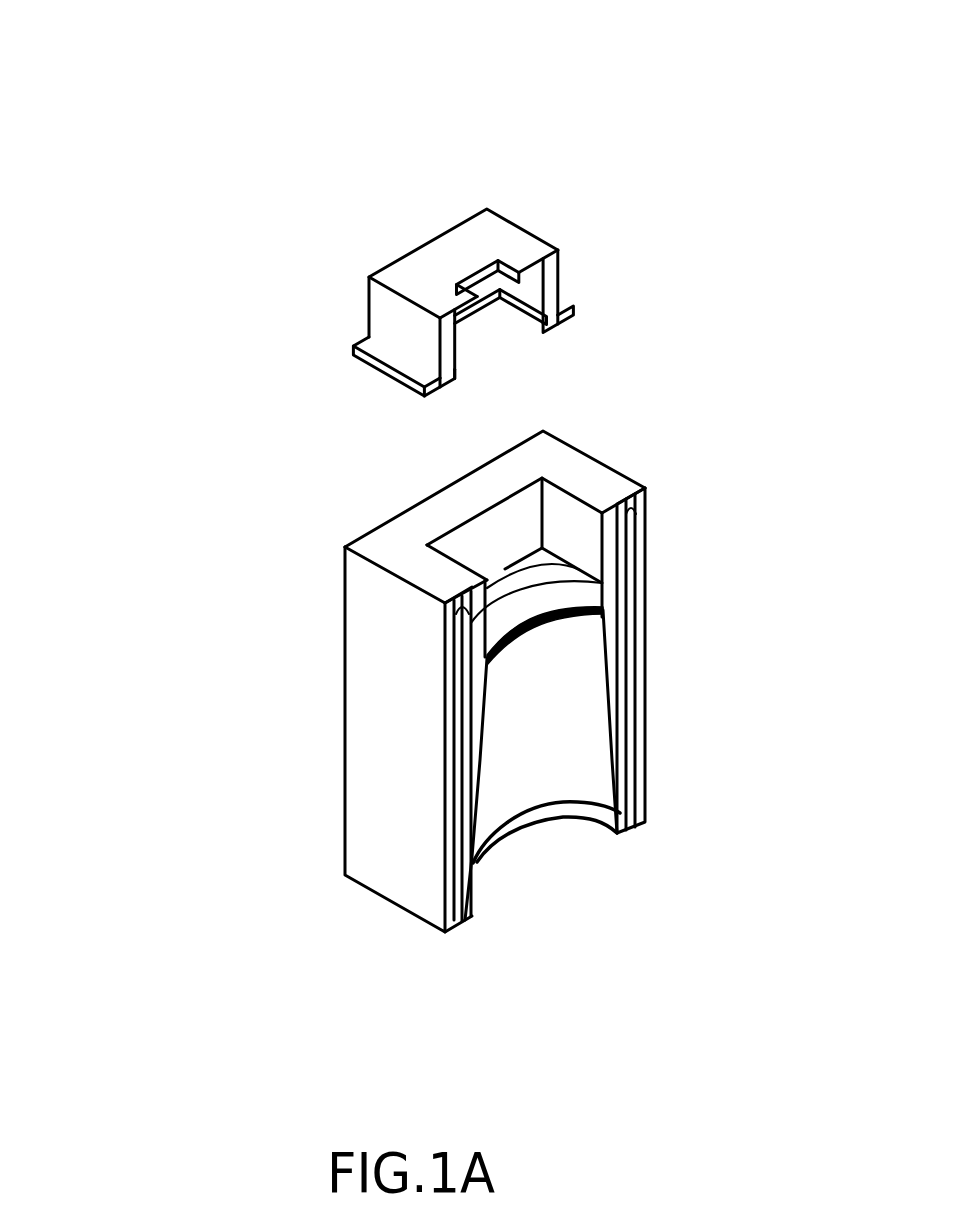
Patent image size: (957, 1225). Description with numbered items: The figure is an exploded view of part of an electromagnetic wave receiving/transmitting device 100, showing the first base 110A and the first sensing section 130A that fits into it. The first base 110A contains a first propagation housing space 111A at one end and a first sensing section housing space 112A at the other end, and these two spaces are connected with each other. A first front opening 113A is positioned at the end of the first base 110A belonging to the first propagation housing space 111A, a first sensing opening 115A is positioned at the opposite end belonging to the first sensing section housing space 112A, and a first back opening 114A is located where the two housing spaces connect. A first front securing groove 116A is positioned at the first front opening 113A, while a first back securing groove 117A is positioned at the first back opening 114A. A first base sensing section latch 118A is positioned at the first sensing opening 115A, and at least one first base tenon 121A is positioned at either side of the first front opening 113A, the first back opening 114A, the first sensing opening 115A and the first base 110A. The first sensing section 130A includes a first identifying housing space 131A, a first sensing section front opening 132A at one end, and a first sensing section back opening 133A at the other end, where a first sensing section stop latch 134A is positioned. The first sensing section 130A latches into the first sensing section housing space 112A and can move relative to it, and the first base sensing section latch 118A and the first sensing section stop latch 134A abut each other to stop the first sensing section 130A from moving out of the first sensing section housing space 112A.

The electromagnetic wave receiving/transmitting device 100 is at (273, 163).
The first sensing section 130A is at (463, 243).
The first identifying housing space 131A is at (530, 298).
The first sensing section front opening 132A is at (483, 352).
The first sensing section back opening 133A is at (477, 272).
The first sensing section stop latch 134A is at (382, 353).
The first base 110A is at (387, 822).
The first propagation housing space 111A is at (505, 760).
The first sensing section housing space 112A is at (487, 548).
The first front opening 113A is at (502, 875).
The first back opening 114A is at (513, 610).
The first sensing opening 115A is at (535, 507).
The first front securing groove 116A is at (500, 818).
The first back securing groove 117A is at (480, 658).
The first base sensing section latch 118A is at (478, 513).
The first base tenon 121A is at (440, 723).